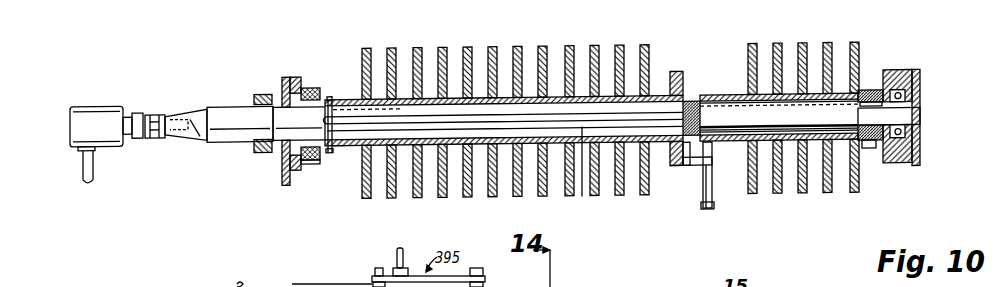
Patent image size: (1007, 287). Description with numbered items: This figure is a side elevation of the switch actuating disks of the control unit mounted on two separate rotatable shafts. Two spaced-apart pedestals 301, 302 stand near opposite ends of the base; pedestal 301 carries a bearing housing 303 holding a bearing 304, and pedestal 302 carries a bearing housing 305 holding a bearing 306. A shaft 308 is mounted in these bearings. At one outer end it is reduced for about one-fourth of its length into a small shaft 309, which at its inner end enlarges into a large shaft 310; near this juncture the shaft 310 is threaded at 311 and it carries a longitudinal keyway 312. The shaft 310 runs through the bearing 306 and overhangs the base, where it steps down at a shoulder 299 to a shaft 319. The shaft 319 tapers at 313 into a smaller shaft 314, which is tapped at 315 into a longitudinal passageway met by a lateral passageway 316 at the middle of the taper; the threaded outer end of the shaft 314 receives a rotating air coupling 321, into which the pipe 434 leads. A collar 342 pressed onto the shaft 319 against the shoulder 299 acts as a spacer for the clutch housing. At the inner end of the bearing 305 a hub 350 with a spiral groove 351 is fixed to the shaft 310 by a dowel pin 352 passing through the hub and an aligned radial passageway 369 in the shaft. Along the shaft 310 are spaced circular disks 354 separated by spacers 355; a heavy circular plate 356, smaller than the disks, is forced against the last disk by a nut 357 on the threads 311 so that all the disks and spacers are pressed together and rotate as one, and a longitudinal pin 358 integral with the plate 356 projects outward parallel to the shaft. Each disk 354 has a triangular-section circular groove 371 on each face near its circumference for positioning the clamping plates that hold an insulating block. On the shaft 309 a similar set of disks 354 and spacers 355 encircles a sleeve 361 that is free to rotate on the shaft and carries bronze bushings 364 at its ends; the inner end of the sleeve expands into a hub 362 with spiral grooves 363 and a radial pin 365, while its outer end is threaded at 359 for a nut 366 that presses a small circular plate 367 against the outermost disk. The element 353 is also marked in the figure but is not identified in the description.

The shoulder 299 is at (273, 126).
The pedestal 301 is at (917, 88).
The pedestal 302 is at (283, 172).
The bearing housing 303 is at (895, 80).
The bearing 304 is at (912, 148).
The bearing housing 305 is at (292, 80).
The bearing 306 is at (308, 92).
The shaft 308 is at (921, 122).
The small shaft 309 is at (779, 115).
The large shaft 310 is at (587, 174).
The threads 311 is at (692, 108).
The keyway 312 is at (408, 127).
The taper 313 is at (180, 114).
The smaller shaft 314 is at (139, 113).
The tapped longitudinal passageway 315 is at (154, 141).
The lateral passageway 316 is at (197, 142).
The shaft 319 is at (240, 124).
The rotating air coupling 321 is at (96, 128).
The collar 342 is at (267, 97).
The hub 350 is at (337, 150).
The spiral groove 351 is at (333, 101).
The dowel pin 352 is at (320, 167).
The pin 353 is at (330, 157).
The circular disks 354 is at (604, 60).
The spacer or bushing 355 is at (371, 74).
The heavy circular plate 356 is at (681, 175).
The nut 357 is at (695, 108).
The longitudinal pin 358 is at (697, 174).
The threads 359 is at (870, 158).
The sleeve 361 is at (787, 132).
The hub 362 is at (713, 160).
The spiral grooves 363 is at (708, 103).
The bronze bushings 364 is at (708, 122).
The radial pin 365 is at (715, 215).
The nut 366 is at (871, 112).
The small circular plate 367 is at (861, 100).
The radial passageway 369 is at (366, 113).
The circular groove 371 is at (440, 52).
The pipe 434 is at (83, 168).